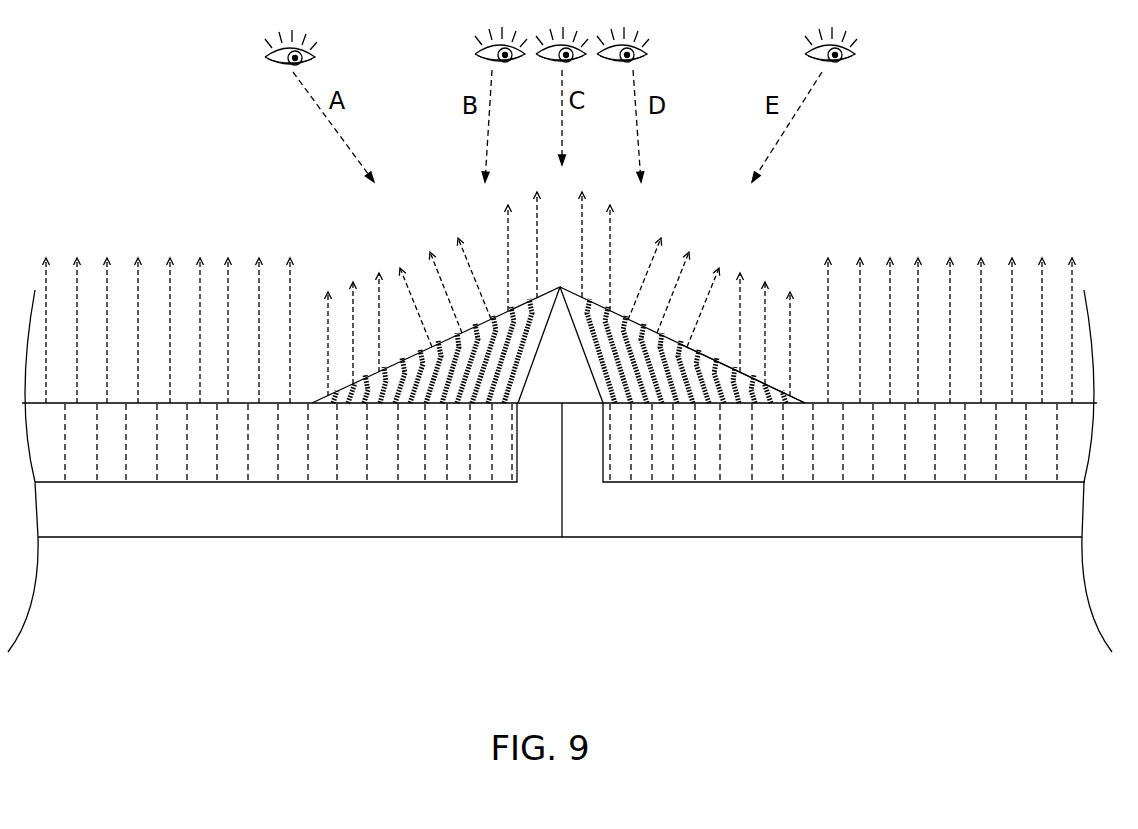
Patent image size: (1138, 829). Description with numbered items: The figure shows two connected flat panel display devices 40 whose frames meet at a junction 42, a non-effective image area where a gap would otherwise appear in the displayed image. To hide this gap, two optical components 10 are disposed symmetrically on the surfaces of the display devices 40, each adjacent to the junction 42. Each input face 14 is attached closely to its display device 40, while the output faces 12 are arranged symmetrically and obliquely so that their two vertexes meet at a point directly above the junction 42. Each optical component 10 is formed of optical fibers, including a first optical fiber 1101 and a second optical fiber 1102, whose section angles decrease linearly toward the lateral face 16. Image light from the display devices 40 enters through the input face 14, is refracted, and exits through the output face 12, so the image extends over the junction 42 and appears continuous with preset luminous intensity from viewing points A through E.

The optical component 10 is at (463, 284).
The output face 12 is at (448, 338).
The first optical fiber 1101 is at (641, 326).
The second optical fiber 1102 is at (762, 383).
The input face 14 is at (427, 403).
The lateral face 16 is at (537, 345).
The junction 42 is at (566, 541).
The display device 40 is at (310, 537).